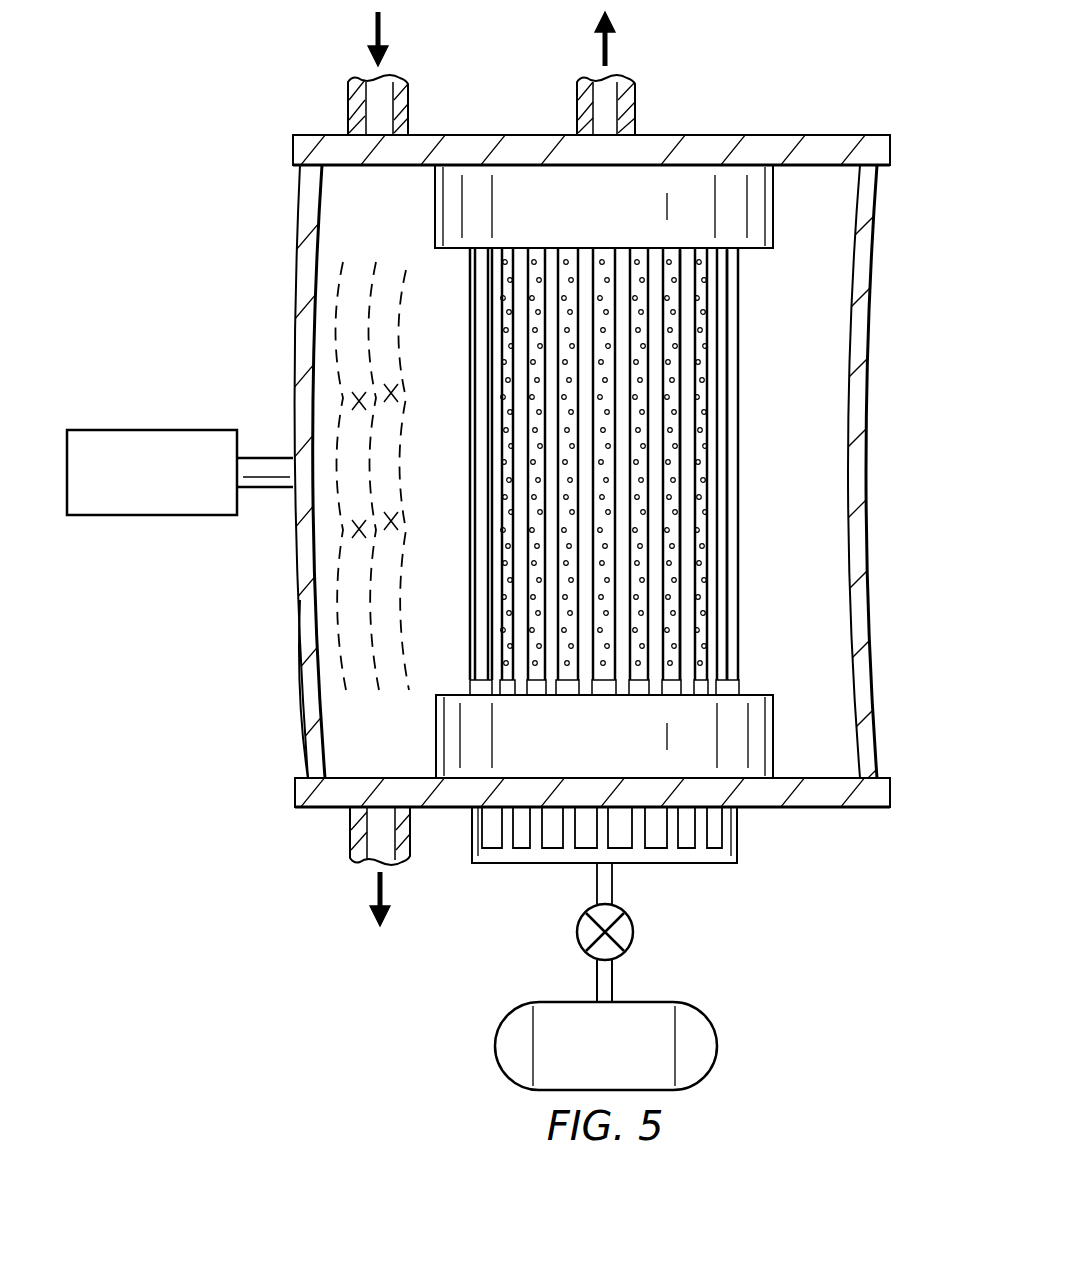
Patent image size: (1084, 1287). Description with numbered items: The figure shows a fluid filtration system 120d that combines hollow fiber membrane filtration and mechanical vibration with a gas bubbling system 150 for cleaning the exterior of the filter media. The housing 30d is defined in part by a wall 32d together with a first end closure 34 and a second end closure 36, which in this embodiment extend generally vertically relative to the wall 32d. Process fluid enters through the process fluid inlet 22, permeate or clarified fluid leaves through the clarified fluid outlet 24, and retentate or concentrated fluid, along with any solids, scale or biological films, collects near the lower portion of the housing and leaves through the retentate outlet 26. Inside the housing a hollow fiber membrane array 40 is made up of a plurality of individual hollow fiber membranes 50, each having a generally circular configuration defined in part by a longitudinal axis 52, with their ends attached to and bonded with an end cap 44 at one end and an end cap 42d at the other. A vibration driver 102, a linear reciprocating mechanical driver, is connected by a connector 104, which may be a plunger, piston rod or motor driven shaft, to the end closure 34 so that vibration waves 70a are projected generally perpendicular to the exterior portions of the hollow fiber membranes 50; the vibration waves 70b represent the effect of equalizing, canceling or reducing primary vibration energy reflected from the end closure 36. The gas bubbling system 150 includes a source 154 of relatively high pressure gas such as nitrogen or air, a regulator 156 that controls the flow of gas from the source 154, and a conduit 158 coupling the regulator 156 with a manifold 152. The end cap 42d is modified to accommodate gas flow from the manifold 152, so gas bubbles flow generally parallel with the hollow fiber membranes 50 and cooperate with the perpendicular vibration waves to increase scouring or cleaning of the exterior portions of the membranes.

The process fluid inlet 22 is at (348, 118).
The clarified fluid outlet 24 is at (636, 106).
The retentate outlet 26 is at (350, 822).
The housing 30d is at (298, 292).
The wall 32d is at (800, 135).
The first end closure 34 is at (297, 650).
The second end closure 36 is at (872, 236).
The hollow fiber membrane array 40 is at (754, 313).
The end cap 42d is at (766, 695).
The end cap 44 is at (435, 210).
The hollow fiber membrane 50 is at (727, 395).
The longitudinal axis 52 is at (677, 513).
The vibration waves 70a is at (388, 668).
The vibration waves 70b is at (410, 410).
The vibration driver 102 is at (150, 516).
The connector 104 is at (268, 490).
The fluid filtration system 120d is at (222, 738).
The gas bubbling system 150 is at (760, 982).
The manifold 152 is at (686, 860).
The gas source 154 is at (495, 1044).
The regulator 156 is at (577, 930).
The conduit 158 is at (613, 982).